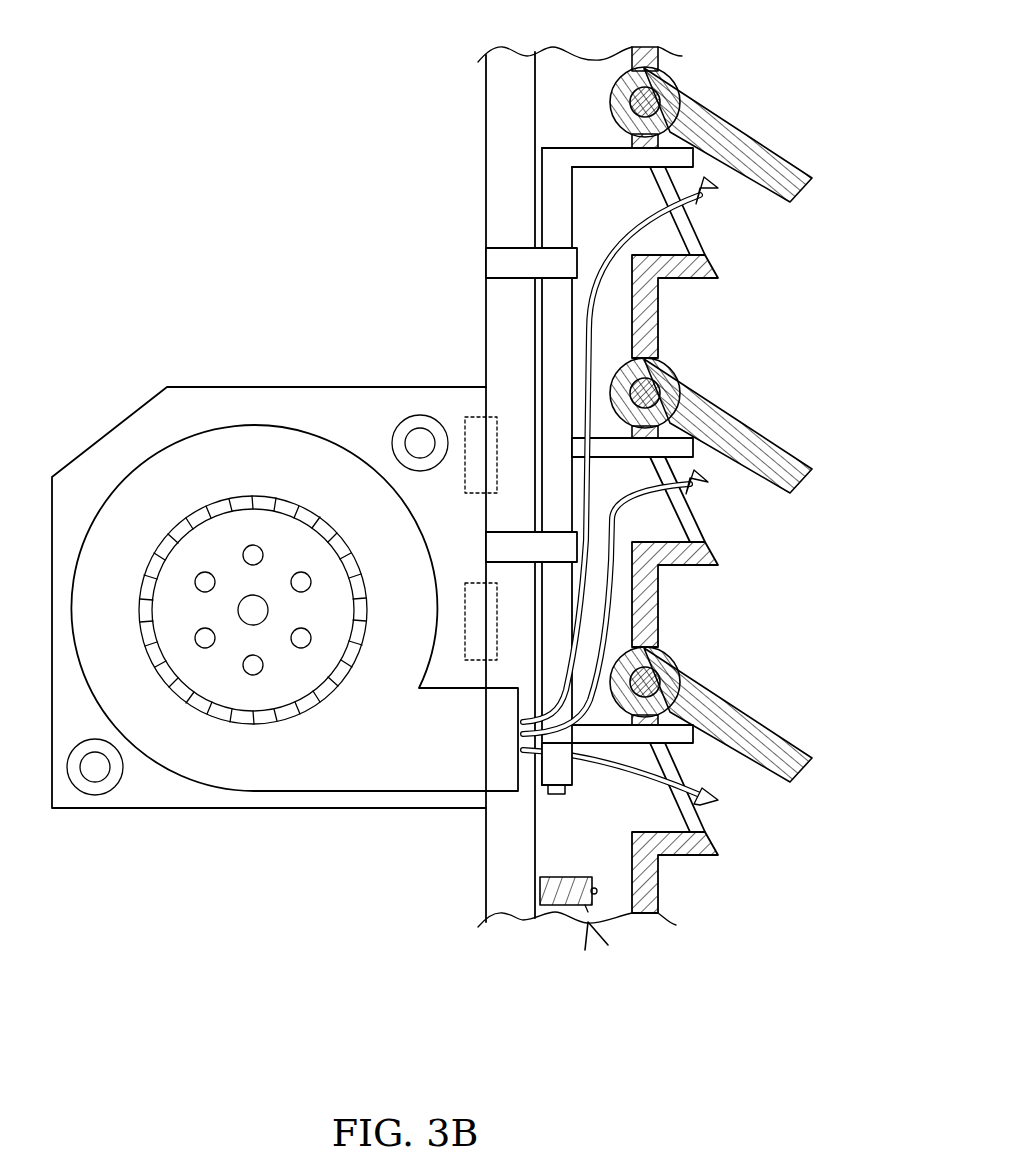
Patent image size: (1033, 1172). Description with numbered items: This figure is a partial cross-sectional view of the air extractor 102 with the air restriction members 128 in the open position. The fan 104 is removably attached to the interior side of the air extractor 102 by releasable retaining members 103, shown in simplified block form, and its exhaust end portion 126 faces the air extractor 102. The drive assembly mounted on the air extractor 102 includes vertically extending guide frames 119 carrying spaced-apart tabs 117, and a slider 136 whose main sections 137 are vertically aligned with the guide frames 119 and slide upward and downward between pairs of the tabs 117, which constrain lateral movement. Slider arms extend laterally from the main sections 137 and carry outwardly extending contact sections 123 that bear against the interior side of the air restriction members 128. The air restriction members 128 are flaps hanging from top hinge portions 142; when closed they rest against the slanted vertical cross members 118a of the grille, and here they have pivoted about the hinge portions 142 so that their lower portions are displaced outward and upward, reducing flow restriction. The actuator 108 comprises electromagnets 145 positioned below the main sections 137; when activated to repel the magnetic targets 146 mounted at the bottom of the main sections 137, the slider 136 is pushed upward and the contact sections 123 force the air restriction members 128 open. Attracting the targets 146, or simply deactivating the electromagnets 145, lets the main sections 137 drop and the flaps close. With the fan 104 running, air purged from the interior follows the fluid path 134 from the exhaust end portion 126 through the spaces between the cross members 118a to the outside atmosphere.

The air extractor 102 is at (660, 873).
The releasable retaining members 103 is at (470, 440).
The fan 104 is at (165, 430).
The actuator 108 is at (590, 925).
The tabs 117 is at (523, 545).
The vertical cross members 118a is at (692, 218).
The guide frames 119 is at (497, 185).
The contact sections 123 is at (613, 158).
The exhaust end portion 126 is at (560, 768).
The air restriction members 128 is at (718, 124).
The fluid path 134 is at (620, 496).
The slider 136 is at (533, 172).
The main sections 137 is at (556, 355).
The hinge portions 142 is at (667, 75).
The electromagnets 145 is at (540, 888).
The targets 146 is at (567, 765).